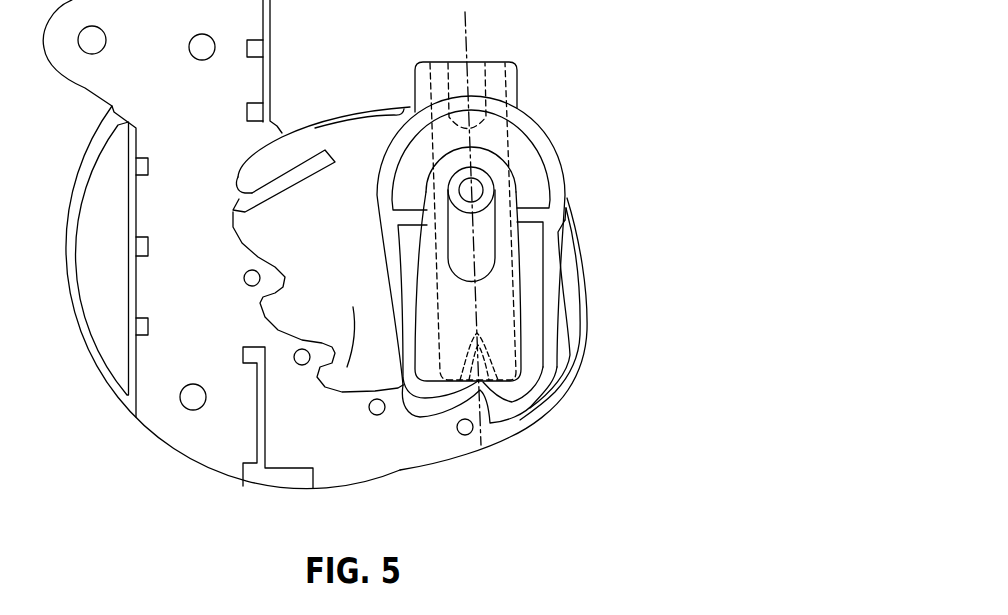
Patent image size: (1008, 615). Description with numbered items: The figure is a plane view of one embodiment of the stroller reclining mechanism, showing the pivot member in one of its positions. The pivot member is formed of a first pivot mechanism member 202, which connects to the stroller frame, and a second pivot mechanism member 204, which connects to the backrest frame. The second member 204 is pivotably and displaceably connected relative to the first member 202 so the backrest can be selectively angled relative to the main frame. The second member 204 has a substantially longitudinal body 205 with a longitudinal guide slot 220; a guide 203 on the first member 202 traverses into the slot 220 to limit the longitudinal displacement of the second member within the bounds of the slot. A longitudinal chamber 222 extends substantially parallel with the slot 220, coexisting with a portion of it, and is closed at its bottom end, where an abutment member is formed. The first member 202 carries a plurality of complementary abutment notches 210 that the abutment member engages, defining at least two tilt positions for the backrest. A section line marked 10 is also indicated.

The section line 10- 10 is at (405, 35).
The first pivot mechanism member 202 is at (503, 458).
The guide 203 is at (483, 190).
The second pivot mechanism member 204 is at (586, 121).
The longitudinal body 205 is at (548, 326).
The abutment notches 210 is at (282, 302).
The longitudinal guide slot 220 is at (487, 243).
The longitudinal chamber 222 is at (503, 357).